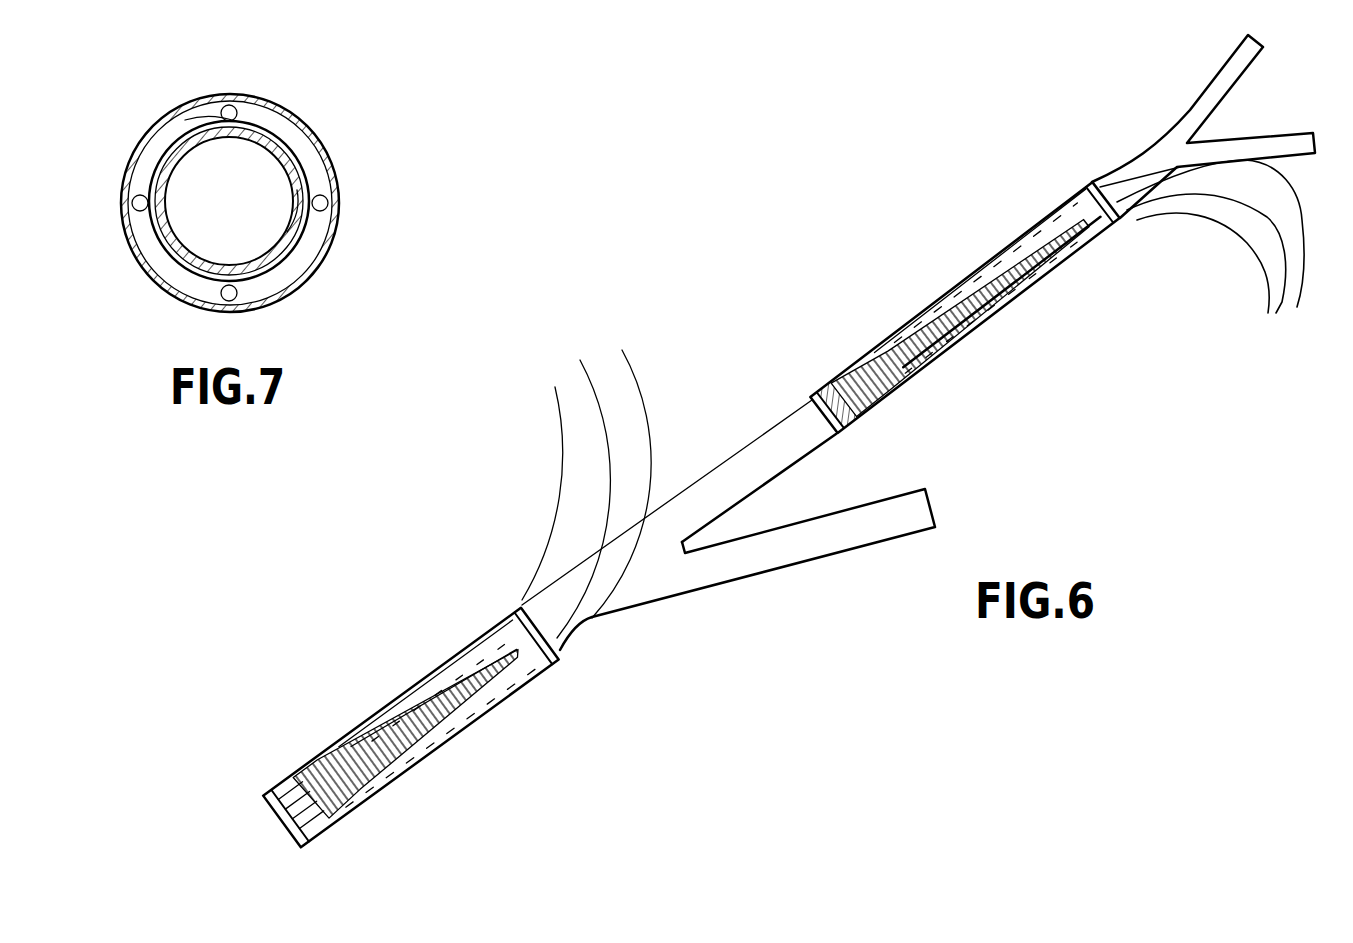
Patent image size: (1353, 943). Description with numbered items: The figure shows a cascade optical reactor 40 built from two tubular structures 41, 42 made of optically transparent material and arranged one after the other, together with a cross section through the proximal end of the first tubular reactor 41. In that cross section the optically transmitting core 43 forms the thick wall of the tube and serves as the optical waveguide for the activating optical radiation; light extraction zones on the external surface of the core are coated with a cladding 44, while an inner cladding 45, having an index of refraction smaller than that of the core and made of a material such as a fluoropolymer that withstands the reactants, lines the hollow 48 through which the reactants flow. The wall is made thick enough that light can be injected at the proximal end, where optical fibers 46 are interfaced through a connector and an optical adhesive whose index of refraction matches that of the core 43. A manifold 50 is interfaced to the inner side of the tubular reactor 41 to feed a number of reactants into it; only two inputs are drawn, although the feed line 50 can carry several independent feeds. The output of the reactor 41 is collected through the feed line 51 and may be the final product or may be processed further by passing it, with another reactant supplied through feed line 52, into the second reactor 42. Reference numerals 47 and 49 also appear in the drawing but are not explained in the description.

In FIG. 6, the cascade optical reactor 40 is at (905, 172).
In FIG. 7, the tubular structure 41 is at (350, 180).
In FIG. 6, the tubular structure 41 is at (1022, 234).
In FIG. 6, the tubular structure 42 is at (480, 650).
In FIG. 7, the optically transmitting core 43 is at (293, 143).
In FIG. 7, the cladding 44 is at (143, 143).
In FIG. 7, the inner cladding 45 is at (197, 127).
In FIG. 7, the optical fibers 46 is at (130, 205).
In FIG. 6, the optical fibers 46 is at (1268, 313).
In FIG. 7, the inner tube wall 47 is at (177, 263).
In FIG. 7, the hollow 48 is at (270, 223).
In FIG. 6, the tapered plug 49 is at (892, 387).
In FIG. 6, the manifold 50 is at (1208, 92).
In FIG. 6, the feed line 51 is at (747, 480).
In FIG. 6, the feed line 52 is at (833, 545).